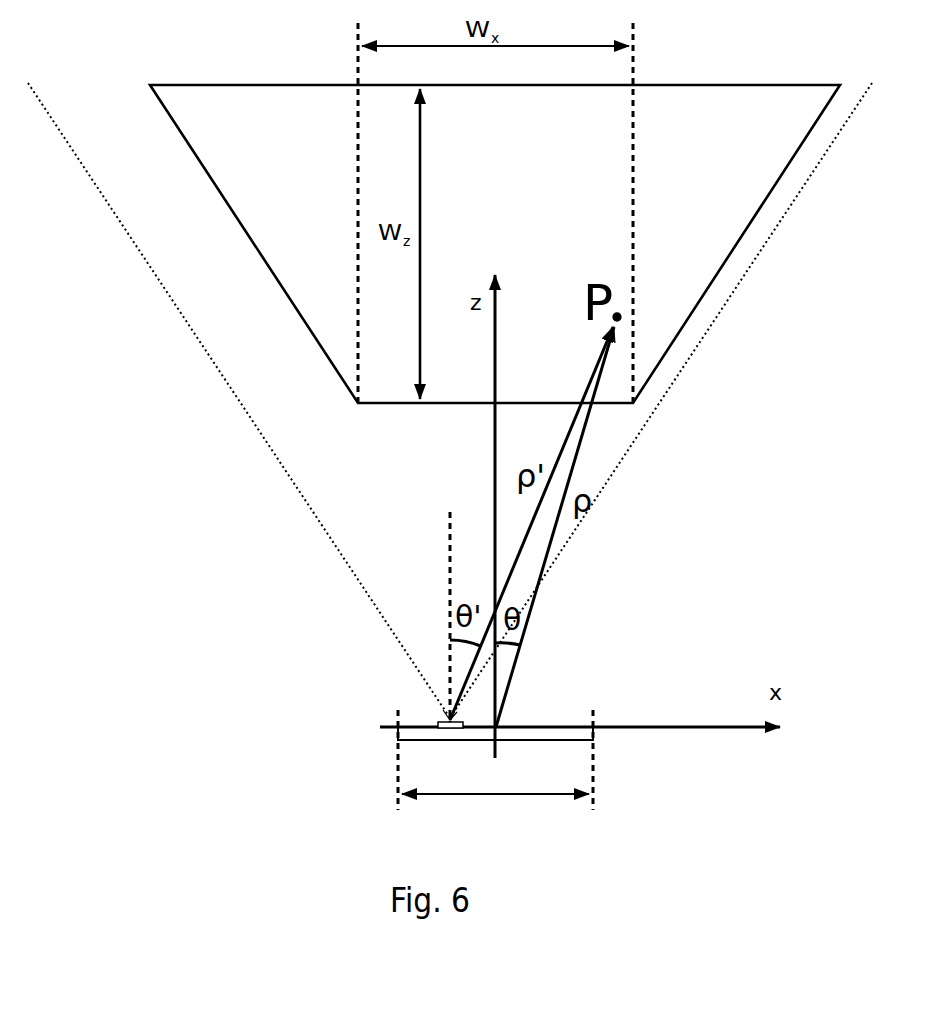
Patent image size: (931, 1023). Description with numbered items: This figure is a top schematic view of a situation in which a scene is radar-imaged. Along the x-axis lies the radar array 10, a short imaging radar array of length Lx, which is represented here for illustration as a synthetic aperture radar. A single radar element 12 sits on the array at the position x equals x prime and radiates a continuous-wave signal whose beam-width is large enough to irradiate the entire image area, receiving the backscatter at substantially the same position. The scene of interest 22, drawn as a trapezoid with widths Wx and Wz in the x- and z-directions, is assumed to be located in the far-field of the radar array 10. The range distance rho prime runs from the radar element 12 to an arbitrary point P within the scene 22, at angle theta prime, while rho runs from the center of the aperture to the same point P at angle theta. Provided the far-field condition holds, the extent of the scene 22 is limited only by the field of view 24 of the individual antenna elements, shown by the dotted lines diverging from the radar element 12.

The radar array 10 is at (574, 710).
The radar element 12 is at (440, 720).
The scene of interest 22 is at (760, 172).
The field of view 24 is at (257, 399).